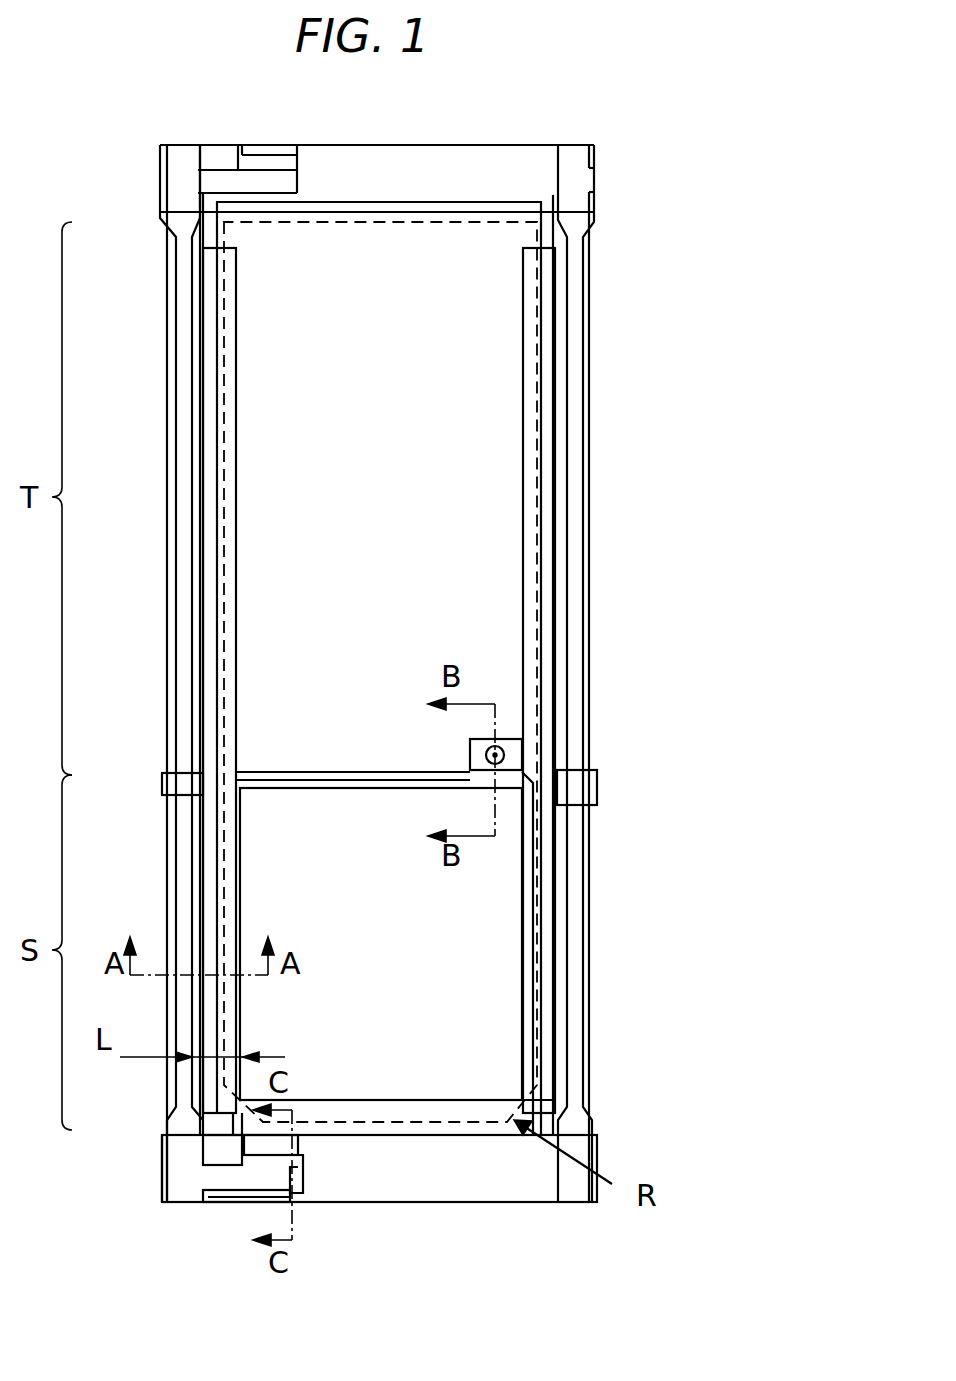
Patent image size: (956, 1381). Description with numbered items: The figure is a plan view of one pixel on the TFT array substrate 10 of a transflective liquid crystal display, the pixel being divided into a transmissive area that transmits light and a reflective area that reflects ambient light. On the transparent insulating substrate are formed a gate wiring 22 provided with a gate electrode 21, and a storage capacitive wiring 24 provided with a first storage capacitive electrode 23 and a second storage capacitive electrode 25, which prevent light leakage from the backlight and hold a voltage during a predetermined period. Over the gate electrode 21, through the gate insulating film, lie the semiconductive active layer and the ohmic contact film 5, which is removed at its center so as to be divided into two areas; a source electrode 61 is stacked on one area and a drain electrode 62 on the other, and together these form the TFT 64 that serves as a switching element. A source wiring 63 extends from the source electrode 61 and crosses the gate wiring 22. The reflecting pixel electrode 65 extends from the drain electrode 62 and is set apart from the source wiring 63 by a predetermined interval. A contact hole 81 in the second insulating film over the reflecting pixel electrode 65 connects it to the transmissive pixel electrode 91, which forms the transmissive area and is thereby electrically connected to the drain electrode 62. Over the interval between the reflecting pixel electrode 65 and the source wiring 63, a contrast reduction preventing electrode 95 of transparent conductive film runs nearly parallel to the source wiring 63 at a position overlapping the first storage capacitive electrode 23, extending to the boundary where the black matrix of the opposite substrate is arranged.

The ohmic contact film 5 is at (228, 1202).
The TFT array substrate 10 is at (582, 1210).
The gate electrode 21 is at (220, 1202).
The gate wiring 22 is at (505, 1190).
The first storage capacitive electrode 23 is at (548, 1083).
The storage capacitive wiring 24 is at (585, 795).
The second storage capacitive electrode 25 is at (540, 405).
The source electrode 61 is at (250, 1202).
The drain electrode 62 is at (260, 1145).
The source wiring 63 is at (185, 1202).
The TFT 64 is at (258, 1260).
The reflecting pixel electrode 65 is at (500, 945).
The contact hole 81 is at (504, 755).
The transmissive pixel electrode 91 is at (490, 610).
The contrast reduction preventing electrode 95 is at (215, 893).